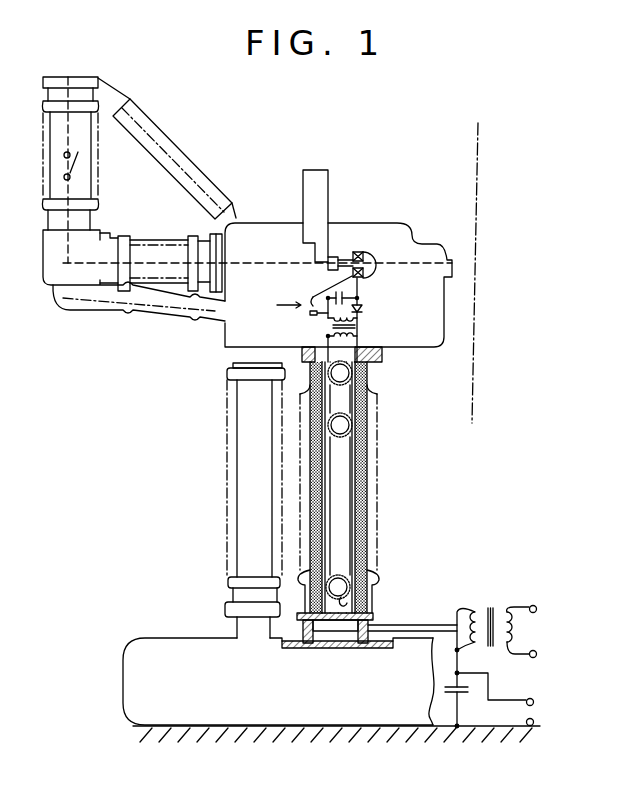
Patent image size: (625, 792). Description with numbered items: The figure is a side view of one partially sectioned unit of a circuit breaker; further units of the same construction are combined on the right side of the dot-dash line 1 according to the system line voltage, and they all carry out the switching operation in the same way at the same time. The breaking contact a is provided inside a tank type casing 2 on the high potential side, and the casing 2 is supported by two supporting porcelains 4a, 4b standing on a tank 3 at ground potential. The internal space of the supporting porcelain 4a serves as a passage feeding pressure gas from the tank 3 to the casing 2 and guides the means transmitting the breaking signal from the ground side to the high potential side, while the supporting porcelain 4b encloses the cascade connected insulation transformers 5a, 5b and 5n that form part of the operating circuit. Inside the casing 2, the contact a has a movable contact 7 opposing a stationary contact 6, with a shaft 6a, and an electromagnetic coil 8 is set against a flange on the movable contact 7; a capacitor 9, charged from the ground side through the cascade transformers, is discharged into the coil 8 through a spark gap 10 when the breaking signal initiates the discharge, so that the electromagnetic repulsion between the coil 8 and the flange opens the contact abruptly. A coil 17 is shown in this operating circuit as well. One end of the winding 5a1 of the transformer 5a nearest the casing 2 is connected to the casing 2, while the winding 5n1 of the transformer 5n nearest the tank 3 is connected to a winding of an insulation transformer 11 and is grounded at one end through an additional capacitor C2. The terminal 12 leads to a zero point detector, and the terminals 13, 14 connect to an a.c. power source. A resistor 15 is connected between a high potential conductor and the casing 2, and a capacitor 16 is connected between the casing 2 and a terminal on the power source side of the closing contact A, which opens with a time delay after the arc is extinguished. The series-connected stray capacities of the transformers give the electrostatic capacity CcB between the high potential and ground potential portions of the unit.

The dot-dash line 1 is at (482, 190).
The casing 2 is at (398, 230).
The tank 3 is at (393, 717).
The supporting porcelain 4a is at (226, 490).
The supporting porcelain 4b is at (378, 512).
The winding 5a1 is at (368, 360).
The transformer 5a is at (353, 383).
The transformer 5b is at (353, 429).
The transformer 5n is at (349, 580).
The winding 5n1 is at (363, 598).
The stationary contact 6 is at (334, 257).
The shaft 6a is at (347, 260).
The movable contact 7 is at (364, 257).
The electromagnetic coil 8 is at (362, 253).
The capacitor 9 is at (361, 291).
The spark gap 10 is at (306, 312).
The insulation transformer 11 is at (501, 597).
The terminal 12 is at (534, 704).
The terminal 13 is at (537, 609).
The terminal 14 is at (537, 654).
The resistor 15 is at (312, 192).
The capacitor 16 is at (171, 161).
The coil 17 is at (391, 337).
The contact A is at (30, 178).
The additional capacitor C2 is at (463, 687).
The capacity CcB is at (433, 400).